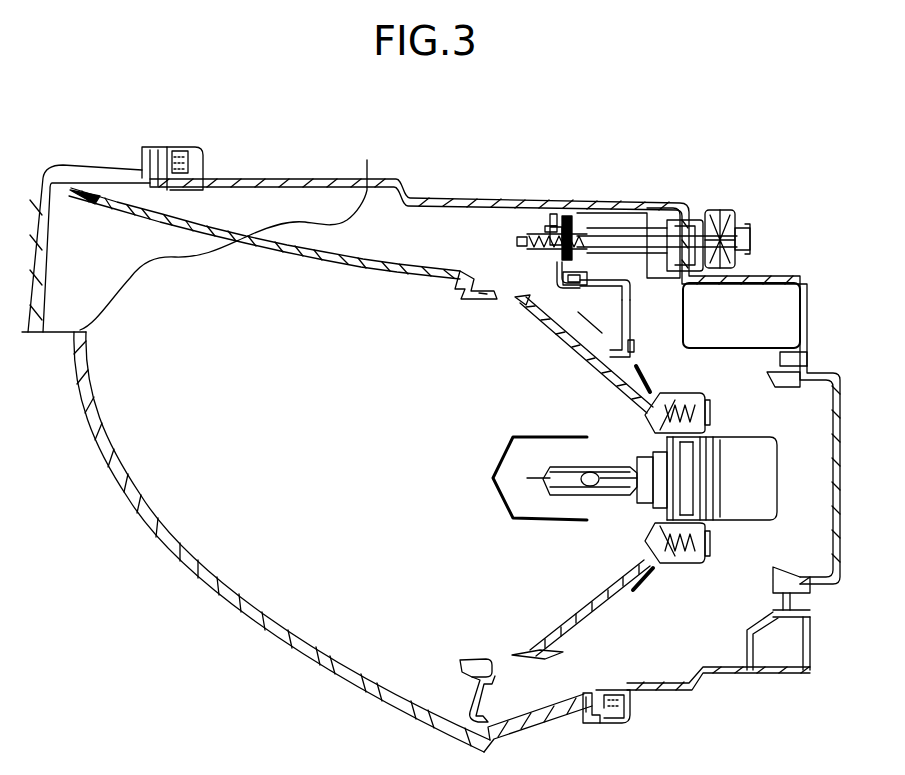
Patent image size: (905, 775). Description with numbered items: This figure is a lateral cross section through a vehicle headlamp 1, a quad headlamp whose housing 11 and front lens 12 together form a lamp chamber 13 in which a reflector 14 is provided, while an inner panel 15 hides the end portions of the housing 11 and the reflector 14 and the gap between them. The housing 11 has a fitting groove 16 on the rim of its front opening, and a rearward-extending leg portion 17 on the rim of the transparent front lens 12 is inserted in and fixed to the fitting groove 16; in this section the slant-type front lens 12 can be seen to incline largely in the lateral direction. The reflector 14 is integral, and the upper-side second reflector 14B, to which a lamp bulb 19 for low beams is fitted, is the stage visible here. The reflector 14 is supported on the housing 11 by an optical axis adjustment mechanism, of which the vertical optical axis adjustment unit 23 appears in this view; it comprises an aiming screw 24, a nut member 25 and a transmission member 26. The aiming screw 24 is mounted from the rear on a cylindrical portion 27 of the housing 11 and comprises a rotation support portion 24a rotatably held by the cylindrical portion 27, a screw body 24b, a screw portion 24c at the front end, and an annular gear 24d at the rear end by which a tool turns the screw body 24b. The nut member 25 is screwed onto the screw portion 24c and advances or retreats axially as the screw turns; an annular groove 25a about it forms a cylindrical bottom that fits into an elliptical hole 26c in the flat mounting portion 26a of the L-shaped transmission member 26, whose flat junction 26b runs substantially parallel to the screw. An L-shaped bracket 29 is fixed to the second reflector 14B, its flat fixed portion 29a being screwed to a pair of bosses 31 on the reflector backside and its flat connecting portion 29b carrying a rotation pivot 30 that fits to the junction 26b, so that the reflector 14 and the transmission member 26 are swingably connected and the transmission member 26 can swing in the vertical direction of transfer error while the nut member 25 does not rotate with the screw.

The vehicle headlamp 1 is at (440, 166).
The housing 11 is at (722, 672).
The front lens 12 is at (130, 505).
The lamp chamber 13 is at (248, 424).
The reflector 14 is at (590, 477).
The second reflector 14B is at (593, 603).
The inner panel 15 is at (300, 262).
The fitting groove 16 is at (187, 147).
The leg portion 17 is at (152, 147).
The lamp bulb 19 is at (603, 458).
The vertical optical axis adjustment unit 23 is at (585, 212).
The aiming screw 24 is at (701, 191).
The rotation support portion 24a is at (692, 228).
The screw body 24b is at (655, 236).
The screw portion 24c is at (612, 204).
The annular gear 24d is at (776, 199).
The nut member 25 is at (545, 185).
The annular groove 25a is at (553, 214).
The transmission member 26 is at (505, 247).
The mounting portion 26a is at (552, 252).
The junction 26b is at (552, 264).
The hole 26c is at (547, 228).
The cylindrical portion 27 is at (722, 283).
The bracket 29 is at (652, 314).
The fixed portion 29a is at (630, 302).
The connecting portion 29b is at (617, 272).
The rotation pivot 30 is at (572, 290).
The bosses 31 is at (593, 333).